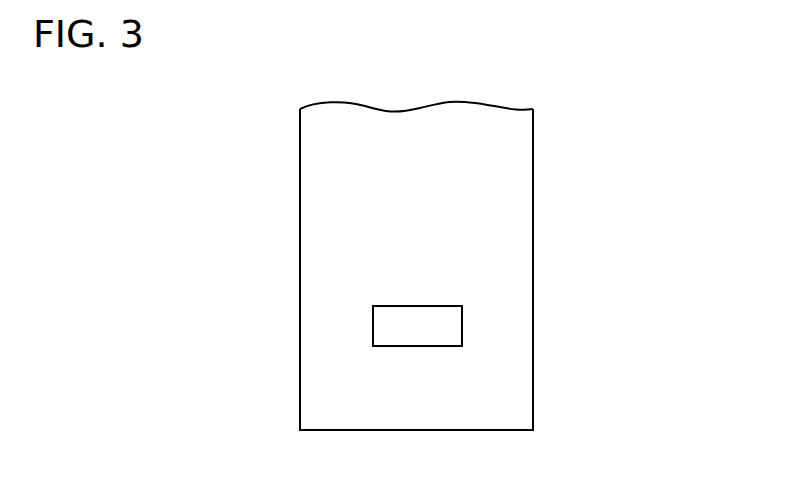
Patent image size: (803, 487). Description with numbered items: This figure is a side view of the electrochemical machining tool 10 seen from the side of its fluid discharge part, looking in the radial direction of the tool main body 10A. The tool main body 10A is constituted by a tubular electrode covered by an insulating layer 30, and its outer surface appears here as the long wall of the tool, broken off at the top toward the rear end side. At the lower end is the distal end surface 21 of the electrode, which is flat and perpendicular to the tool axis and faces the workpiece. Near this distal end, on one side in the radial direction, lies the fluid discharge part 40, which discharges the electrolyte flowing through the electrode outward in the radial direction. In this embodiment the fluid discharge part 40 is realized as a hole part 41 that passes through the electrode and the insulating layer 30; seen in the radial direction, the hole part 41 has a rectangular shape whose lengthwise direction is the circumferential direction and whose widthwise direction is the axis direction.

The electrochemical machining tool 10 is at (567, 112).
The tool main body 10A is at (545, 158).
The insulating layer 30 is at (510, 222).
The distal end surface 21 is at (487, 431).
The fluid discharge part 40 is at (466, 305).
The hole part 41 is at (461, 328).